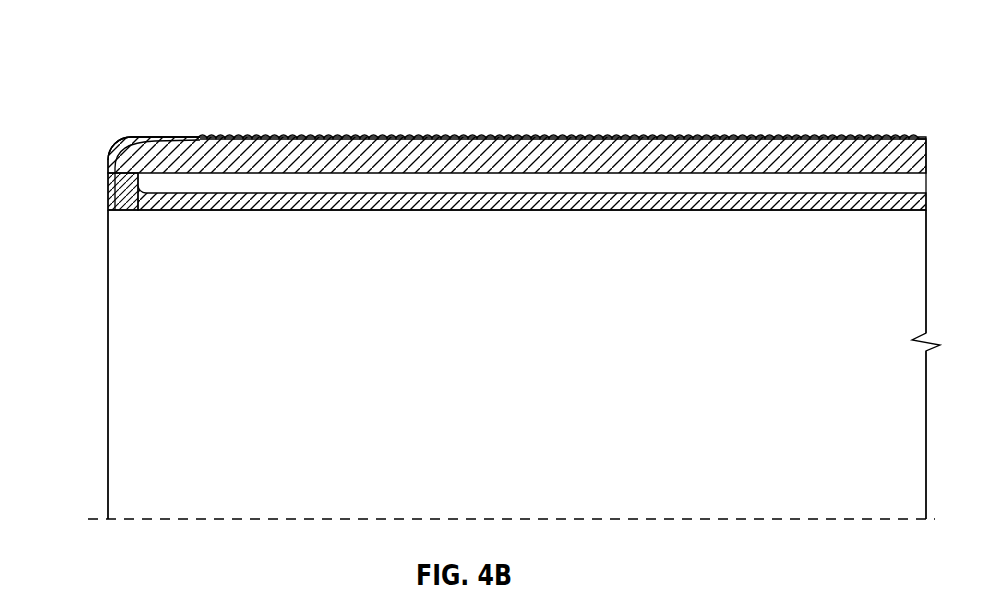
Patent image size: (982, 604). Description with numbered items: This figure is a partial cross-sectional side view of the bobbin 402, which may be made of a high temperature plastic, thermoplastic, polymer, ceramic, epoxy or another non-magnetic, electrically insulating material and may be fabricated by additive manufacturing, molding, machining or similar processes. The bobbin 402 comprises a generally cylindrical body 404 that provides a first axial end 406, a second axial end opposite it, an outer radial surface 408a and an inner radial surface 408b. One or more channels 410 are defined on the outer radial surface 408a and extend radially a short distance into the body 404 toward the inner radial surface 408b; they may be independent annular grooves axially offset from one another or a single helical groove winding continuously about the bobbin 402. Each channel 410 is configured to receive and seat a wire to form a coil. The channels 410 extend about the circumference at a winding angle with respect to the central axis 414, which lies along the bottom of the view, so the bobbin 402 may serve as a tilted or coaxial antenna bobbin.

The bobbin 402 is at (129, 54).
The body 404 is at (152, 137).
The first axial end 406 is at (107, 320).
The outer radial surface 408a is at (916, 136).
The inner radial surface 408b is at (830, 209).
The channels 410 is at (380, 136).
The central axis 414 is at (222, 518).